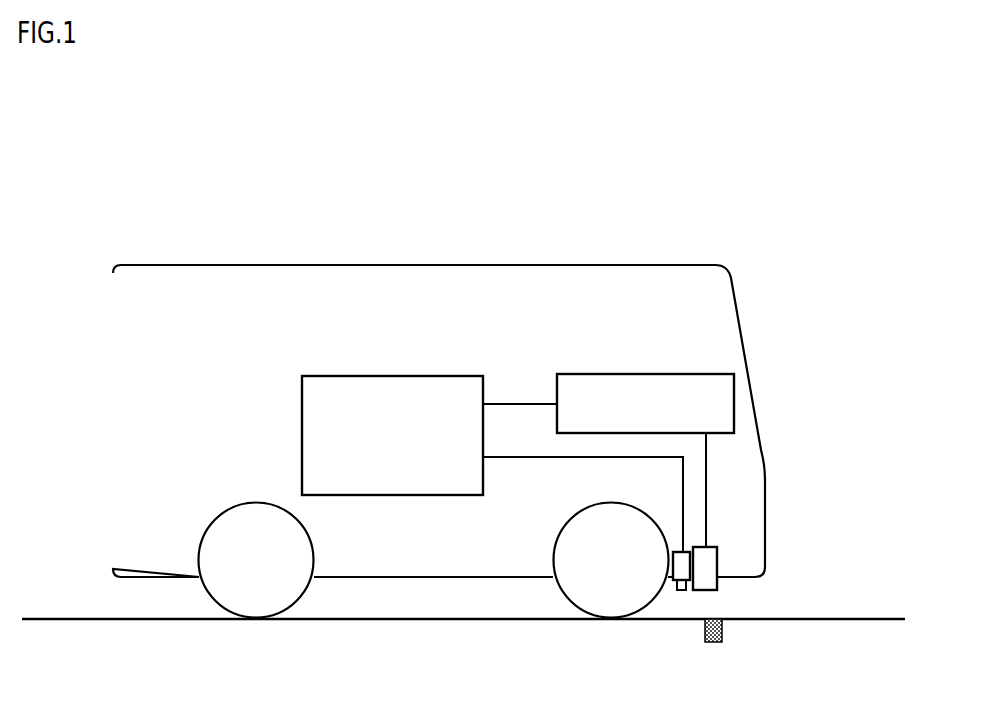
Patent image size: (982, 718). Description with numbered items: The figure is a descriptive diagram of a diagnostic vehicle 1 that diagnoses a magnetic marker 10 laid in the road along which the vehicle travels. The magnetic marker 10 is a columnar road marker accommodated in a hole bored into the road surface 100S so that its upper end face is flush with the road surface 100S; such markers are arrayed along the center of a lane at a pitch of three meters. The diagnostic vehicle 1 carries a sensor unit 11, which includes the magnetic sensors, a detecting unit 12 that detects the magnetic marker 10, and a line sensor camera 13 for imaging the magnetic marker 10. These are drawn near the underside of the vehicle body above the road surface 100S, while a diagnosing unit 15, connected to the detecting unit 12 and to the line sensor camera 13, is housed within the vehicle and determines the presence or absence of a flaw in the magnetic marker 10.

The diagnostic vehicle 1 is at (782, 280).
The magnetic marker 10 is at (704, 631).
The sensor unit 11 is at (717, 566).
The detecting unit 12 is at (627, 385).
The line sensor camera 13 is at (673, 567).
The diagnosing unit 15 is at (368, 386).
The road surface 100S is at (850, 618).